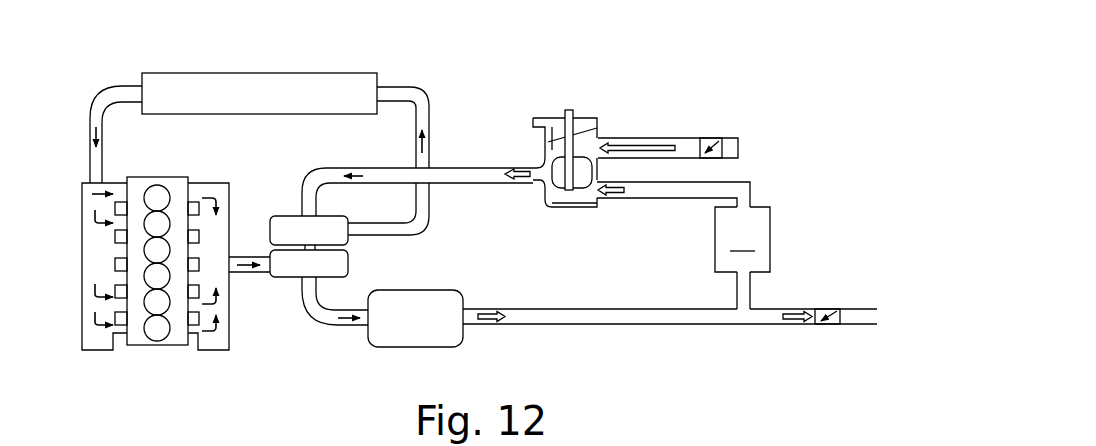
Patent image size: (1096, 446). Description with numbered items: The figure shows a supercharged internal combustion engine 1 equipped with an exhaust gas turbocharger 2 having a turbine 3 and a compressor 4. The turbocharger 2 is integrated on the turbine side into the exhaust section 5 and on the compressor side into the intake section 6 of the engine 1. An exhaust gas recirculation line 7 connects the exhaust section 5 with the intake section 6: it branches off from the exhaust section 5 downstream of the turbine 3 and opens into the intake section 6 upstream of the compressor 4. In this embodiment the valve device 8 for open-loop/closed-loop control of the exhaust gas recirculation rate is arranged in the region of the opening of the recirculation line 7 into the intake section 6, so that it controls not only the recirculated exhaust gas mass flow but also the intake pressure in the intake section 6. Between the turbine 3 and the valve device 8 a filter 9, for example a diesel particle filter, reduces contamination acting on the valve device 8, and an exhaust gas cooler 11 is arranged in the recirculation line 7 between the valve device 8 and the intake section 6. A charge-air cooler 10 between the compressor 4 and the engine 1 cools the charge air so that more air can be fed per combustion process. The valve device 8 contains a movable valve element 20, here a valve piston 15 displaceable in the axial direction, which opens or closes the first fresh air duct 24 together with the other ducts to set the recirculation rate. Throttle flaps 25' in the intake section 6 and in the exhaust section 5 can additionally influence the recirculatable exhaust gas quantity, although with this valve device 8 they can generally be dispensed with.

The internal combustion engine 1 is at (72, 178).
The exhaust gas turbocharger 2 is at (332, 252).
The turbine 3 is at (290, 262).
The compressor 4 is at (290, 218).
The exhaust section 5 is at (660, 312).
The intake section 6 is at (409, 92).
The exhaust gas recirculation line 7 is at (746, 200).
The valve device 8 is at (597, 124).
The filter 9 is at (449, 323).
The charge-air cooler 10 is at (272, 82).
The exhaust gas cooler 11 is at (742, 258).
The valve piston 15 is at (417, 210).
The valve element 20 is at (417, 210).
The first fresh air duct 24 is at (588, 143).
The throttle flap 25' is at (795, 200).